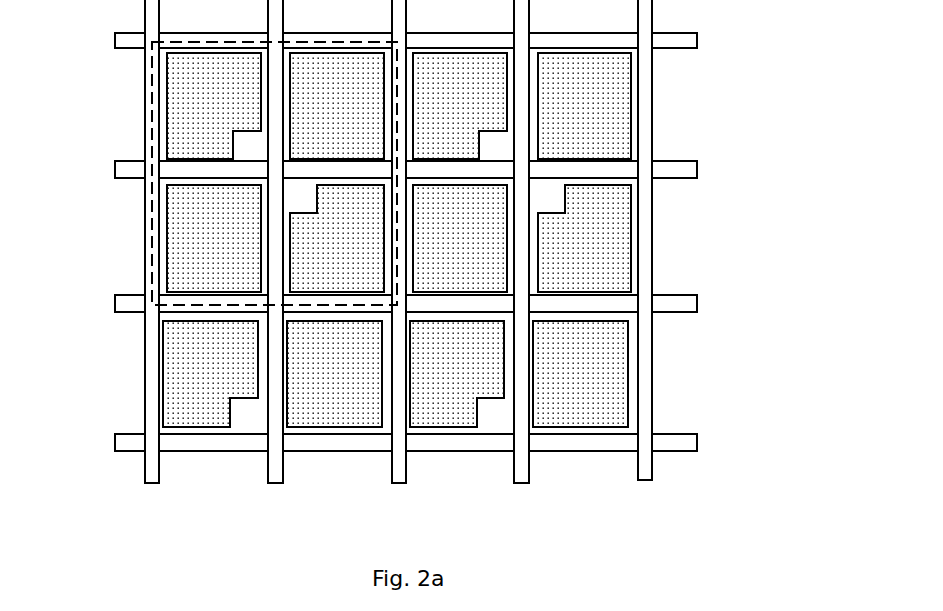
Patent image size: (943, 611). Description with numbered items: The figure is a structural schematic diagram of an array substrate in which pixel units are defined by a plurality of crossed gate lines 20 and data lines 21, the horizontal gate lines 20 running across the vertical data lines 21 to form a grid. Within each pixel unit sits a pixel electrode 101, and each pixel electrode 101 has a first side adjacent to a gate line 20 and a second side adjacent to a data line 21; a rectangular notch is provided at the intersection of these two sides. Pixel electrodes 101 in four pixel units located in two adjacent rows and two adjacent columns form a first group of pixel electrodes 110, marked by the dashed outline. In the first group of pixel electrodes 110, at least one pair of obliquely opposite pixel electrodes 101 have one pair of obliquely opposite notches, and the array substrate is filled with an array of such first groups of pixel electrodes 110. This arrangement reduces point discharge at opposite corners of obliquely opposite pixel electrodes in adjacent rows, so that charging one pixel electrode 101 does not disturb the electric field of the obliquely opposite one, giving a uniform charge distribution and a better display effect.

The gate line 20 is at (692, 39).
The data line 21 is at (647, 233).
The pixel electrode 101 is at (188, 103).
The first group of pixel electrodes 110 is at (153, 237).